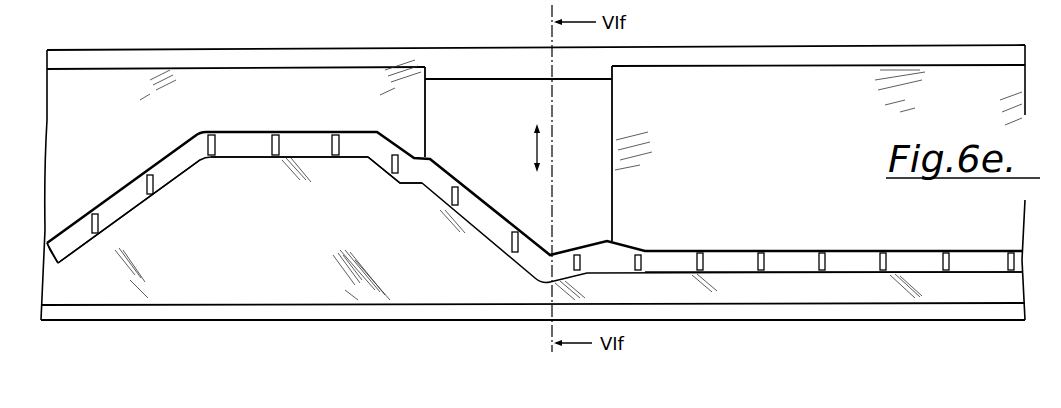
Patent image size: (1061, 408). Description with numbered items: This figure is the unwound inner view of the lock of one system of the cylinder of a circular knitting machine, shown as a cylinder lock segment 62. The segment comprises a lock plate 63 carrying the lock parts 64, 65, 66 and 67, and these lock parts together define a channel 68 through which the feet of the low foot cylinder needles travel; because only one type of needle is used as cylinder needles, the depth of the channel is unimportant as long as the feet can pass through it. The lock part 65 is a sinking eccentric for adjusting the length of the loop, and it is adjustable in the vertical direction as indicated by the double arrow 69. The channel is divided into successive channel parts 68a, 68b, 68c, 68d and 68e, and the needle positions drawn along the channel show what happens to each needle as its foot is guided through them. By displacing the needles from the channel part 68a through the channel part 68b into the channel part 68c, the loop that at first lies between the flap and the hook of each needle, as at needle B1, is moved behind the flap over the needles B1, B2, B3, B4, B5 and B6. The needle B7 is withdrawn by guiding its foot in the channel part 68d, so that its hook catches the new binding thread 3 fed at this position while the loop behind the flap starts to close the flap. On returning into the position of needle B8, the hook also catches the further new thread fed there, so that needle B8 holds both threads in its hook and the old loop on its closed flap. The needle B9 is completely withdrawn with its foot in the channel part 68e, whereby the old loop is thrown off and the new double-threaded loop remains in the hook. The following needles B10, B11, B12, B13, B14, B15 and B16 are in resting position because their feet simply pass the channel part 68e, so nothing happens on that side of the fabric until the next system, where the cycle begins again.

The binding thread 3 is at (374, 146).
The cylinder lock segment 62 is at (698, 333).
The lock plate 63 is at (420, 314).
The lock part 64 is at (247, 88).
The sinking eccentric 65 is at (460, 93).
The lock part 66 is at (833, 92).
The lock part 67 is at (292, 290).
The channel 68 is at (121, 184).
The channel part 68a is at (47, 258).
The channel part 68b is at (123, 212).
The channel part 68c is at (245, 157).
The channel part 68d is at (414, 178).
The channel part 68e is at (843, 270).
The double arrow 69 is at (534, 153).
The needle B1 is at (89, 208).
The needle B2 is at (144, 173).
The needle B3 is at (211, 132).
The needle B4 is at (274, 132).
The needle B5 is at (334, 132).
The needle B6 is at (397, 149).
The needle B7 is at (456, 180).
The needle B8 is at (516, 223).
The needle B9 is at (574, 247).
The needle B10 is at (639, 247).
The needle B11 is at (700, 249).
The needle B12 is at (761, 249).
The needle B13 is at (822, 249).
The needle B14 is at (884, 249).
The needle B15 is at (946, 249).
The needle B16 is at (1010, 249).